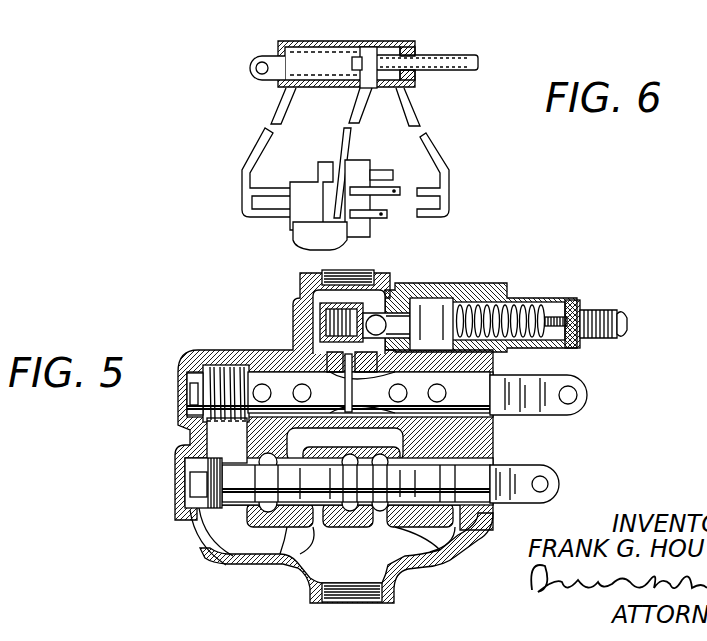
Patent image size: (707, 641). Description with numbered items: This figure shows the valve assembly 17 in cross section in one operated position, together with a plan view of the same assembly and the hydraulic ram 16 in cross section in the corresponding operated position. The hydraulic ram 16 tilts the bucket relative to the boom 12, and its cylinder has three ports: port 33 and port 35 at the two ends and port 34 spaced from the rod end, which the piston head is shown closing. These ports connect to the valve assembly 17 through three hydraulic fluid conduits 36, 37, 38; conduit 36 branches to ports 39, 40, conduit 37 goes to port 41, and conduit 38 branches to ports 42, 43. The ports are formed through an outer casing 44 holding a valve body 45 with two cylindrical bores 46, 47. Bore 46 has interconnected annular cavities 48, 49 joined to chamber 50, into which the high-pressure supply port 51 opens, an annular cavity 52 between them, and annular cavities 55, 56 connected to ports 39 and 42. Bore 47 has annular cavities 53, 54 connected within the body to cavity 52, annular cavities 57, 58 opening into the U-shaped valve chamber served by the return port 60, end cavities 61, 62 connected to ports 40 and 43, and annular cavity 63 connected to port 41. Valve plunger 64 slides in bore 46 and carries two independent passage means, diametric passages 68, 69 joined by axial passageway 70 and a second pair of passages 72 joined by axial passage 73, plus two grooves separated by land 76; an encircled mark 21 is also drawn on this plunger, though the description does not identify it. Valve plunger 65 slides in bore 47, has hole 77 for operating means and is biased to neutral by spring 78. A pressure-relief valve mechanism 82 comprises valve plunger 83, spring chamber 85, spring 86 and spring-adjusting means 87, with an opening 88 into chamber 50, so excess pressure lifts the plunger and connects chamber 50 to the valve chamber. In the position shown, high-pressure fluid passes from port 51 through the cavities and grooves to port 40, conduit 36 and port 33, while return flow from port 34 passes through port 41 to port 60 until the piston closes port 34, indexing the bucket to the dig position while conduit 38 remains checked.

In FIG. 5, the boom 12 is at (250, 342).
In FIG. 6, the hydraulic ram 16 is at (333, 40).
In FIG. 6, the valve assembly 17 is at (290, 238).
In FIG. 5, the spool land 21 is at (398, 393).
In FIG. 6, the port 33 is at (278, 93).
In FIG. 6, the port 34 is at (358, 95).
In FIG. 6, the port 35 is at (400, 100).
In FIG. 6, the hydraulic fluid conduit 36 is at (258, 140).
In FIG. 6, the hydraulic fluid conduit 37 is at (346, 131).
In FIG. 6, the hydraulic fluid conduit 38 is at (436, 146).
In FIG. 6, the port 39 is at (321, 176).
In FIG. 6, the port 40 is at (313, 244).
In FIG. 6, the port 41 is at (366, 245).
In FIG. 6, the port 42 is at (353, 174).
In FIG. 6, the port 43 is at (362, 228).
In FIG. 5, the outer casing 44 is at (240, 566).
In FIG. 5, the valve body 45 is at (308, 526).
In FIG. 5, the cylindrical bore 46 is at (278, 420).
In FIG. 5, the cylindrical bore 47 is at (292, 446).
In FIG. 5, the annular cavity 48 is at (302, 331).
In FIG. 5, the annular cavity 49 is at (379, 353).
In FIG. 5, the chamber 50 is at (375, 272).
In FIG. 5, the port 51 is at (318, 278).
In FIG. 5, the annular cavity 52 is at (340, 427).
In FIG. 5, the annular cavity 53 is at (293, 515).
In FIG. 5, the annular cavity 54 is at (448, 530).
In FIG. 5, the annular cavity 55 is at (246, 356).
In FIG. 5, the annular cavity 56 is at (484, 366).
In FIG. 5, the annular cavity 57 is at (303, 522).
In FIG. 5, the annular cavity 58 is at (375, 508).
In FIG. 5, the port 60 is at (362, 596).
In FIG. 5, the annular cavity 61 is at (255, 527).
In FIG. 5, the annular cavity 62 is at (460, 556).
In FIG. 5, the annular cavity 63 is at (346, 545).
In FIG. 5, the valve plunger 64 is at (506, 418).
In FIG. 5, the valve plunger 65 is at (488, 493).
In FIG. 5, the diametric passage 68 is at (302, 393).
In FIG. 5, the diametric passage 69 is at (262, 393).
In FIG. 5, the axial passageway 70 is at (295, 344).
In FIG. 5, the diametric passage 72 is at (437, 393).
In FIG. 5, the axial passage 73 is at (458, 338).
In FIG. 5, the land 76 is at (352, 378).
In FIG. 5, the hole 77 is at (550, 484).
In FIG. 5, the spring 78 is at (257, 523).
In FIG. 5, the pressure-relief valve mechanism 82 is at (575, 300).
In FIG. 5, the valve plunger 83 is at (440, 298).
In FIG. 5, the spring chamber 85 is at (452, 300).
In FIG. 5, the spring 86 is at (514, 306).
In FIG. 5, the spring-adjusting means 87 is at (626, 320).
In FIG. 5, the opening 88 is at (384, 304).